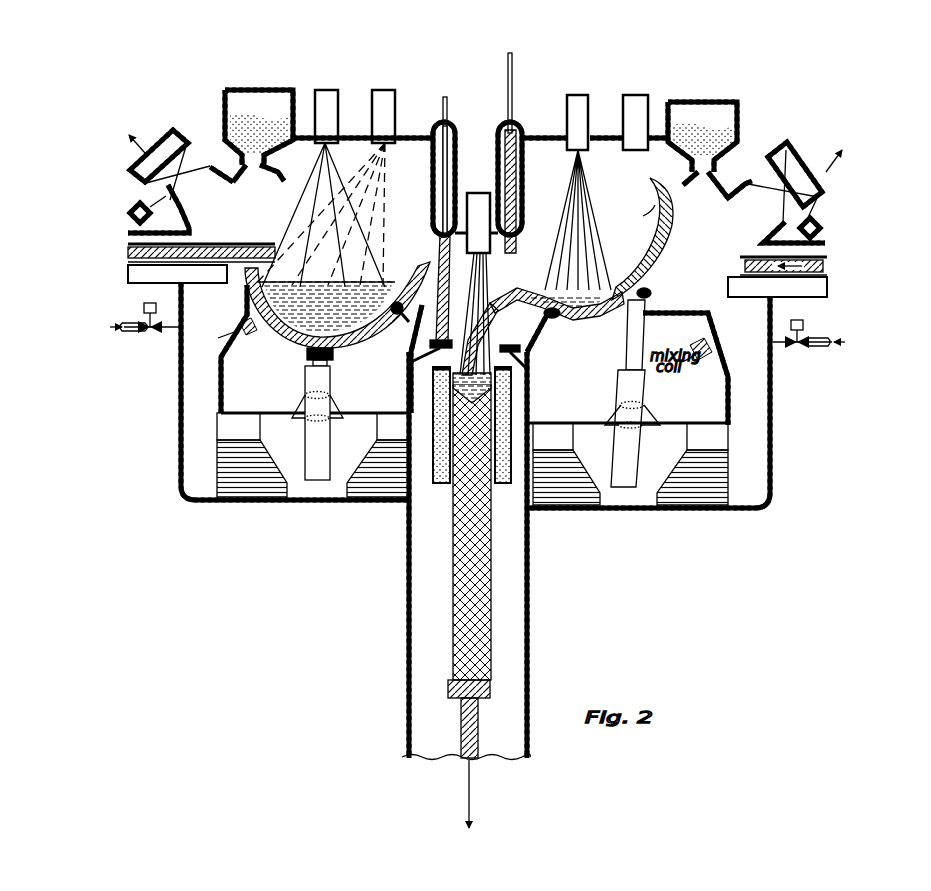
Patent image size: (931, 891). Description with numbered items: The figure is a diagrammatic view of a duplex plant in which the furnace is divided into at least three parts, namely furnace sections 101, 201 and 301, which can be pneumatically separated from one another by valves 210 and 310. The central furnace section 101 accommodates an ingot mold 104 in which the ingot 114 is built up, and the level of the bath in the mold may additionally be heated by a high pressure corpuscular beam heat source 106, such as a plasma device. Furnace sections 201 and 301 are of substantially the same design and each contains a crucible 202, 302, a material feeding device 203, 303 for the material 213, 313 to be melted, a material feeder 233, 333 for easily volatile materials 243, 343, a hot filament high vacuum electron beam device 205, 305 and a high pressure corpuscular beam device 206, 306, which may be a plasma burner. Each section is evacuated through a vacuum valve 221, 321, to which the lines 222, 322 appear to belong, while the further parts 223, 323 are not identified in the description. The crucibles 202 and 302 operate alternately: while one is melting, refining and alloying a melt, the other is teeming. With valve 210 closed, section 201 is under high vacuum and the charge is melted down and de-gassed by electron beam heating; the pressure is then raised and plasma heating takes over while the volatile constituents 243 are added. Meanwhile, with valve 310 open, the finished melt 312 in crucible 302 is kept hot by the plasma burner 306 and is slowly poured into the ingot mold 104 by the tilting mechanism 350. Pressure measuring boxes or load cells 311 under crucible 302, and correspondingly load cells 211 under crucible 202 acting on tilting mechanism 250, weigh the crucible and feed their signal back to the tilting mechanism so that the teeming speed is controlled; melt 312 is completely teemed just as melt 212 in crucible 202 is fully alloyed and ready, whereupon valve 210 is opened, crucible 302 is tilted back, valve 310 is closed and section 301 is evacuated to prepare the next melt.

The furnace section 101 is at (530, 648).
The ingot mold 104 is at (503, 488).
The high pressure corpuscular beam heat source 106 is at (480, 197).
The ingot 114 is at (490, 583).
The furnace section 201 is at (211, 503).
The crucible 202 is at (264, 333).
The material feeding device 203 is at (200, 283).
The hot filament high vacuum electron beam device 205 is at (324, 90).
The high pressure corpuscular beam device 206 is at (390, 90).
The valve 210 is at (455, 125).
The load cells 211 is at (228, 428).
The melt 212 is at (357, 340).
The material to be melted 213 is at (226, 245).
The vacuum valve 221 is at (220, 167).
The vacuum lock chamber 222 is at (168, 132).
The gas inlet valve 223 is at (145, 327).
The material feeder 233 is at (245, 88).
The easily volatile materials 243 is at (232, 125).
The tilting mechanism 250 is at (331, 383).
The furnace section 301 is at (740, 512).
The crucible 302 is at (668, 255).
The material feeding device 303 is at (752, 290).
The hot filament high vacuum electron beam device 305 is at (641, 95).
The high pressure corpuscular beam heat source 306 is at (577, 95).
The valve 310 is at (505, 130).
The load cells 311 is at (565, 431).
The melt 312 is at (586, 318).
The material to be melted 313 is at (750, 260).
The vacuum valve 321 is at (756, 186).
The vacuum lock chamber 322 is at (801, 160).
The gas inlet valve 323 is at (809, 343).
The material feeder 333 is at (714, 100).
The easily volatile materials 343 is at (728, 134).
The tilting mechanism 350 is at (645, 393).